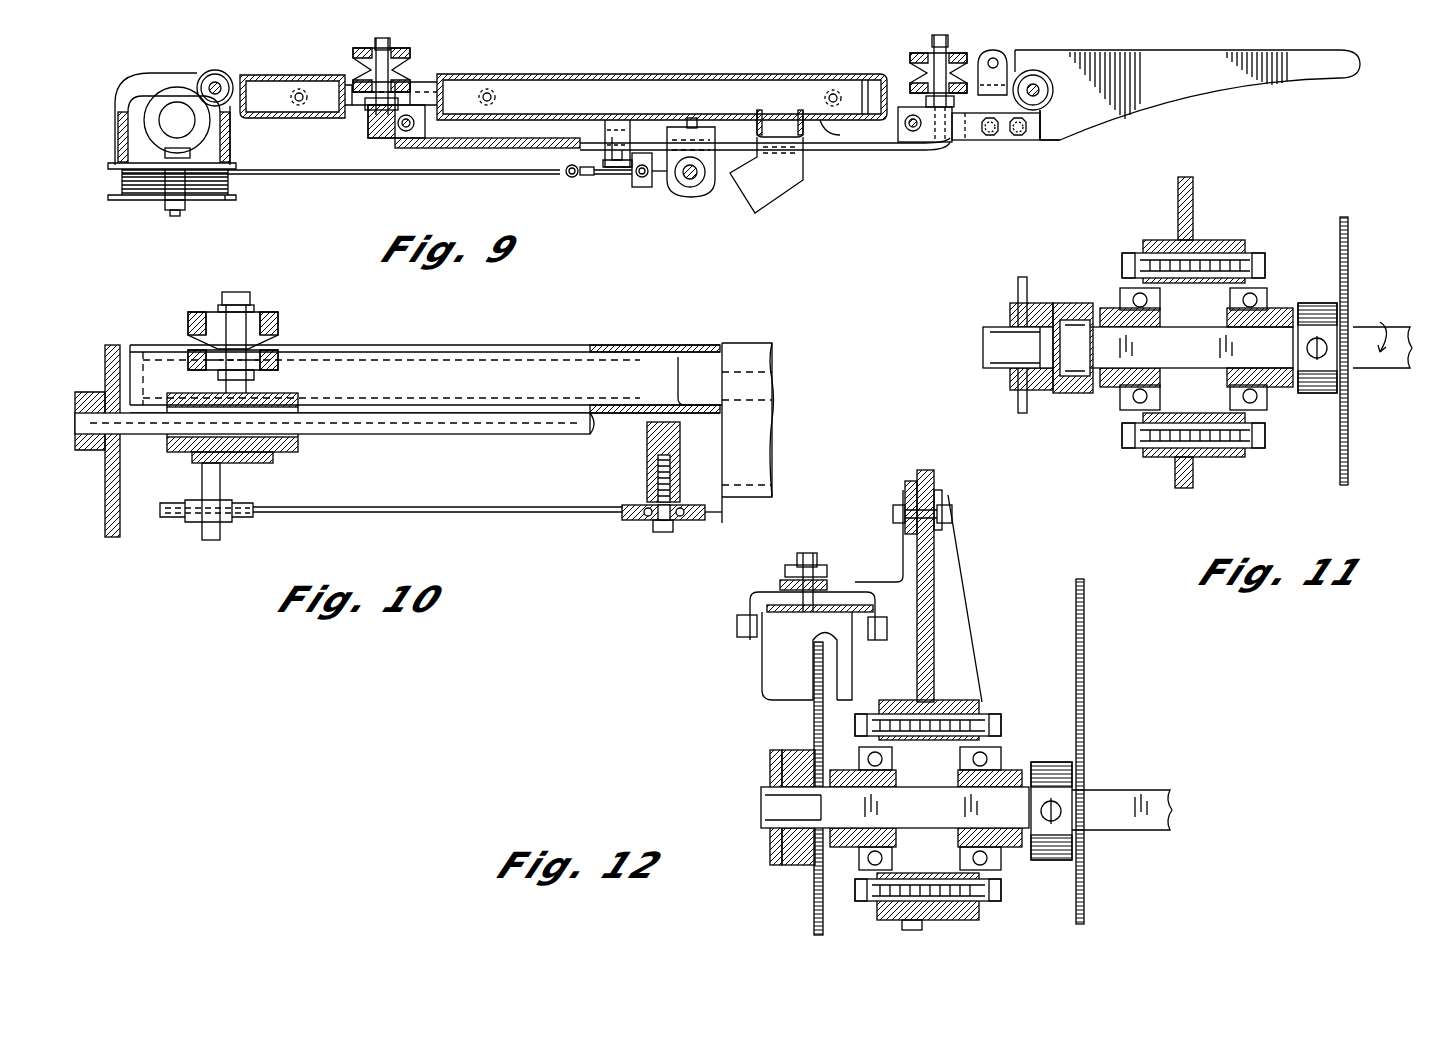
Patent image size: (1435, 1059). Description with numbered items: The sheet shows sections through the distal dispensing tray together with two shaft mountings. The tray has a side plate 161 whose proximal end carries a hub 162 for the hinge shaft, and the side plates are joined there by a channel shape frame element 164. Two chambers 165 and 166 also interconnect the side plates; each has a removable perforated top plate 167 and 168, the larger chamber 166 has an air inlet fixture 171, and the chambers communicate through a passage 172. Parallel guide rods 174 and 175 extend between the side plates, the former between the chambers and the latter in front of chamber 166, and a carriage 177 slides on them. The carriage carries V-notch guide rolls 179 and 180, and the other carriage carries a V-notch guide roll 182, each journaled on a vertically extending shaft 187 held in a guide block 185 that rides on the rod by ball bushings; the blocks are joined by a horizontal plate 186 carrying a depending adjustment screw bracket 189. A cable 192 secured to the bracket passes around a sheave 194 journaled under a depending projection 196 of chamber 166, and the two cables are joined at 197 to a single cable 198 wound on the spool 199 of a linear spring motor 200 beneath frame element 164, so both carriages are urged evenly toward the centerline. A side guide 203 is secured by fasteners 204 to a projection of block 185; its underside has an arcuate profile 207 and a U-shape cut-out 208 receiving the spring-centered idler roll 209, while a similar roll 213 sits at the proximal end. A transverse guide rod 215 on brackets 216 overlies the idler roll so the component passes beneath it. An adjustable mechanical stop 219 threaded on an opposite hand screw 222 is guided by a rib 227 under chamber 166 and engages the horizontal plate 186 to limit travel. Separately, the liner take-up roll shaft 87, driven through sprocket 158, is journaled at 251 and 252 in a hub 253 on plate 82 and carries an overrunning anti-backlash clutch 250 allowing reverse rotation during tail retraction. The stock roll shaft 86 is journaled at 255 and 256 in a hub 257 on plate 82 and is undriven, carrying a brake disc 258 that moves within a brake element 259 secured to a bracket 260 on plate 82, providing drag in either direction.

In FIG. 11, the plate 82 is at (1195, 185).
In FIG. 12, the plate 82 is at (935, 598).
In FIG. 12, the shaft of the stock roll 86 is at (1130, 790).
In FIG. 11, the shaft of the liner take-up roll 87 is at (1378, 327).
In FIG. 11, the sprocket 158 is at (1020, 290).
In FIG. 10, the side plate 161 is at (120, 537).
In FIG. 9, the hub 162 is at (165, 86).
In FIG. 9, the channel shape frame element 164 is at (232, 140).
In FIG. 10, the channel shape frame element 164 is at (772, 448).
In FIG. 9, the chamber 165 is at (318, 118).
In FIG. 9, the chamber 166 is at (842, 134).
In FIG. 9, the top plate 167 is at (270, 74).
In FIG. 9, the top plate 168 is at (563, 74).
In FIG. 10, the top plate 168 is at (625, 345).
In FIG. 9, the air inlet fixture 171 is at (792, 190).
In FIG. 9, the passage 172 is at (423, 88).
In FIG. 10, the passage 172 is at (678, 380).
In FIG. 9, the guide rod 174 is at (415, 125).
In FIG. 9, the guide rod 175 is at (922, 128).
In FIG. 10, the guide rod 175 is at (392, 436).
In FIG. 9, the carriage 177 is at (464, 161).
In FIG. 9, the V-notch guide roll 179 is at (353, 36).
In FIG. 9, the V-notch guide roll 180 is at (914, 42).
In FIG. 10, the V-notch guide roll 182 is at (292, 312).
In FIG. 10, the guide block 185 is at (272, 400).
In FIG. 9, the horizontal plate 186 is at (887, 152).
In FIG. 10, the horizontal plate 186 is at (258, 465).
In FIG. 10, the vertically extending shaft 187 is at (210, 388).
In FIG. 9, the adjustment screw bracket 189 is at (648, 187).
In FIG. 10, the adjustment screw bracket 189 is at (215, 540).
In FIG. 10, the cable 192 is at (525, 514).
In FIG. 10, the sheave 194 is at (640, 522).
In FIG. 9, the depending projection 196 is at (604, 130).
In FIG. 10, the depending projection 196 is at (648, 475).
In FIG. 9, the joint 197 is at (573, 178).
In FIG. 9, the cable 198 is at (360, 176).
In FIG. 9, the spool 199 is at (225, 200).
In FIG. 9, the linear spring motor 200 is at (142, 210).
In FIG. 9, the side guide 203 is at (1140, 102).
In FIG. 9, the fastener 204 is at (1018, 140).
In FIG. 9, the arcuate profile 207 is at (1222, 85).
In FIG. 9, the U-shape cut-out 208 is at (1045, 75).
In FIG. 9, the idler roll 209 is at (1050, 108).
In FIG. 9, the roll 213 is at (215, 70).
In FIG. 9, the transverse guide rod 215 is at (993, 50).
In FIG. 9, the bracket 216 is at (1016, 50).
In FIG. 9, the adjustable mechanical stop 219 is at (710, 190).
In FIG. 9, the opposite hand screw 222 is at (688, 187).
In FIG. 9, the rib 227 is at (692, 118).
In FIG. 11, the overrunning anti-backlash clutch 250 is at (1079, 408).
In FIG. 11, the bearing 251 is at (1118, 300).
In FIG. 11, the bearing 252 is at (1272, 300).
In FIG. 11, the hub 253 is at (1225, 240).
In FIG. 12, the bearing 255 is at (895, 757).
In FIG. 12, the bearing 256 is at (1003, 758).
In FIG. 12, the hub 257 is at (965, 702).
In FIG. 12, the brake disc 258 is at (813, 900).
In FIG. 12, the brake element 259 is at (765, 700).
In FIG. 12, the bracket 260 is at (880, 580).